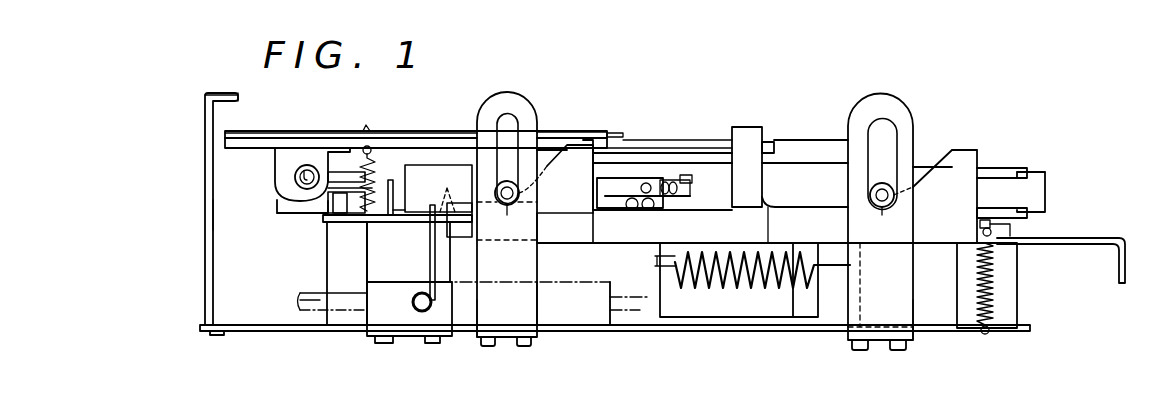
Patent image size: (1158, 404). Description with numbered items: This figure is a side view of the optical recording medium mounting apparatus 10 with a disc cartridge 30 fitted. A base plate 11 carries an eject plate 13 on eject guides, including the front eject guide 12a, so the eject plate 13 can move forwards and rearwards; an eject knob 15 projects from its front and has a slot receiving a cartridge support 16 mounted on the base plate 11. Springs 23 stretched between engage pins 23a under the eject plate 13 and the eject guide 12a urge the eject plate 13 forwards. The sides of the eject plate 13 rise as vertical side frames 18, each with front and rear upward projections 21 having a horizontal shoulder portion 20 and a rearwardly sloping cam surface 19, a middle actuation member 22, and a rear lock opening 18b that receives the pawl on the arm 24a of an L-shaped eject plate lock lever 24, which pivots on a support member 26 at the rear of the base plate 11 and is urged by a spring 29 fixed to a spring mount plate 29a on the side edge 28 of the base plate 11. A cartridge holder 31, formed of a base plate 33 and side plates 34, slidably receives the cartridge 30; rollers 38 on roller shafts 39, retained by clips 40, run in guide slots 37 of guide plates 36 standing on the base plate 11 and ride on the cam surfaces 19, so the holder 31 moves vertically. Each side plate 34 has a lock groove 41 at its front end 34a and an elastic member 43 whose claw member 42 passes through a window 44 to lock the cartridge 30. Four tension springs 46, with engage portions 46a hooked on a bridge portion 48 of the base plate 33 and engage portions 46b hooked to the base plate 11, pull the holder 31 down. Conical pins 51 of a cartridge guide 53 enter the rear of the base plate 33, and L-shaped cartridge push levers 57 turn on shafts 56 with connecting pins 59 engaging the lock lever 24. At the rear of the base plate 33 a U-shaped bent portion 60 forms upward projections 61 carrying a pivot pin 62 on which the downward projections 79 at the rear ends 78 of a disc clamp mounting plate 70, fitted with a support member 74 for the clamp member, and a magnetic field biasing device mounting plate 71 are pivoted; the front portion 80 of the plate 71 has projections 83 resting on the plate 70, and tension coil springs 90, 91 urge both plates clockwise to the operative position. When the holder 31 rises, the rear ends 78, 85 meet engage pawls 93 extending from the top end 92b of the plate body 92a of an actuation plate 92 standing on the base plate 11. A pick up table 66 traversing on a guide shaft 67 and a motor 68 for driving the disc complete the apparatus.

The optical recording medium mounting apparatus 10 is at (1020, 64).
The base plate 11 is at (575, 331).
The front left eject guide 12a is at (832, 328).
The eject plate 13 is at (623, 243).
The eject knob 15 is at (1112, 239).
The cartridge support 16 is at (1010, 297).
The side frame 18 is at (805, 210).
The lock opening 18b is at (593, 303).
The cam surface 19 is at (555, 150).
The horizontal shoulder portion 20 is at (587, 140).
The upward projection 21 is at (570, 225).
The actuation member 22 is at (750, 127).
The spring 23 is at (760, 285).
The engage pin 23a is at (666, 270).
The eject plate lock lever 24 is at (330, 222).
The arm 24a is at (378, 222).
The support member 26 is at (333, 271).
The side edge 28 is at (343, 331).
The spring 29 is at (446, 272).
The spring mount plate 29a is at (413, 332).
The disc cartridge 30 is at (1046, 187).
The cartridge holder 31 is at (703, 163).
The base plate 33 is at (1010, 232).
The side plate 34 is at (833, 160).
The front end 34a is at (1046, 210).
The guide plate 36 is at (506, 305).
The guide slot 37 is at (507, 112).
The roller 38 is at (502, 182).
The roller shaft 39 is at (506, 210).
The clip 40 is at (561, 160).
The lock groove 41 is at (1035, 172).
The claw member 42 is at (687, 175).
The elastic member 43 is at (633, 197).
The window 44 is at (658, 182).
The tension spring 46 is at (990, 305).
The engage portion 46a is at (993, 235).
The engage portion 46b is at (985, 332).
The bridge portion 48 is at (983, 225).
The conical pin 51 is at (447, 188).
The cartridge guide 53 is at (405, 250).
The shaft 56 is at (340, 212).
The cartridge push lever 57 is at (408, 165).
The connecting pin 59 is at (343, 262).
The U-shaped bent portion 60 is at (285, 201).
The upward projection 61 is at (276, 218).
The pivot pin 62 is at (307, 165).
The pick up table 66 is at (553, 318).
The guide shaft 67 is at (307, 305).
The motor 68 is at (770, 243).
The disc clamp mounting plate 70 is at (716, 140).
The magnetic field biasing device mounting plate 71 is at (443, 131).
The support member 74 is at (703, 140).
The rear end 78 is at (224, 141).
The downward projection 79 is at (296, 155).
The front portion 80 is at (600, 131).
The projection 83 is at (614, 133).
The rear end 85 is at (250, 133).
The tension coil spring 90 is at (364, 158).
The tension coil spring 91 is at (367, 126).
The actuation plate 92 is at (205, 253).
The plate body 92a is at (206, 213).
The top end 92b is at (205, 96).
The engage pawl 93 is at (238, 93).